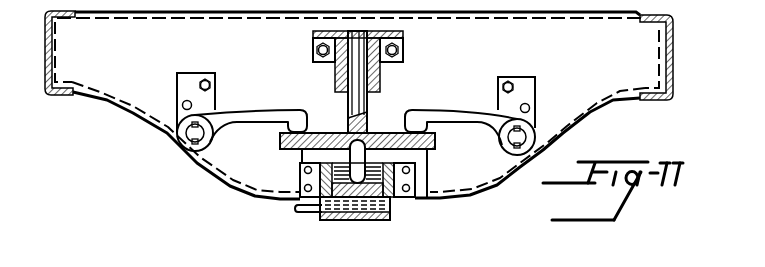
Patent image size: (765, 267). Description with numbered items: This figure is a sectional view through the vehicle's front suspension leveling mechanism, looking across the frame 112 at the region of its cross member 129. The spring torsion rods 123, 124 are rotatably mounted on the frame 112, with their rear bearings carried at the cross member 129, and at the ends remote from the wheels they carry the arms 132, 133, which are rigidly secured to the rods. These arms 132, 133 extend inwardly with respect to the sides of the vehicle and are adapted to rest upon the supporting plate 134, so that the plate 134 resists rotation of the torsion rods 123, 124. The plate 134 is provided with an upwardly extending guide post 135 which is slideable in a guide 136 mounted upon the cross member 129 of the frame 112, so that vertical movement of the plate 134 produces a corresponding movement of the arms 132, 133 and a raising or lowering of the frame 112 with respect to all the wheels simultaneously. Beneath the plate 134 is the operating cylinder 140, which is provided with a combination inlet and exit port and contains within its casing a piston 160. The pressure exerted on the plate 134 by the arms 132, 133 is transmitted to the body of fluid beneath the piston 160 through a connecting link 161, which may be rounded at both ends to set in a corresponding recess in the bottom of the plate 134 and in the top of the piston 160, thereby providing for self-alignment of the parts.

The frame 112 is at (671, 50).
The cross member 129 is at (617, 75).
The spring torsion rod 123 is at (180, 138).
The spring torsion rod 124 is at (498, 190).
The arm 132 is at (296, 72).
The arm 133 is at (463, 113).
The supporting plate 134 is at (427, 198).
The guide post 135 is at (362, 105).
The guide 136 is at (382, 75).
The operating cylinder 140 is at (373, 203).
The piston 160 is at (365, 193).
The connecting link 161 is at (337, 158).